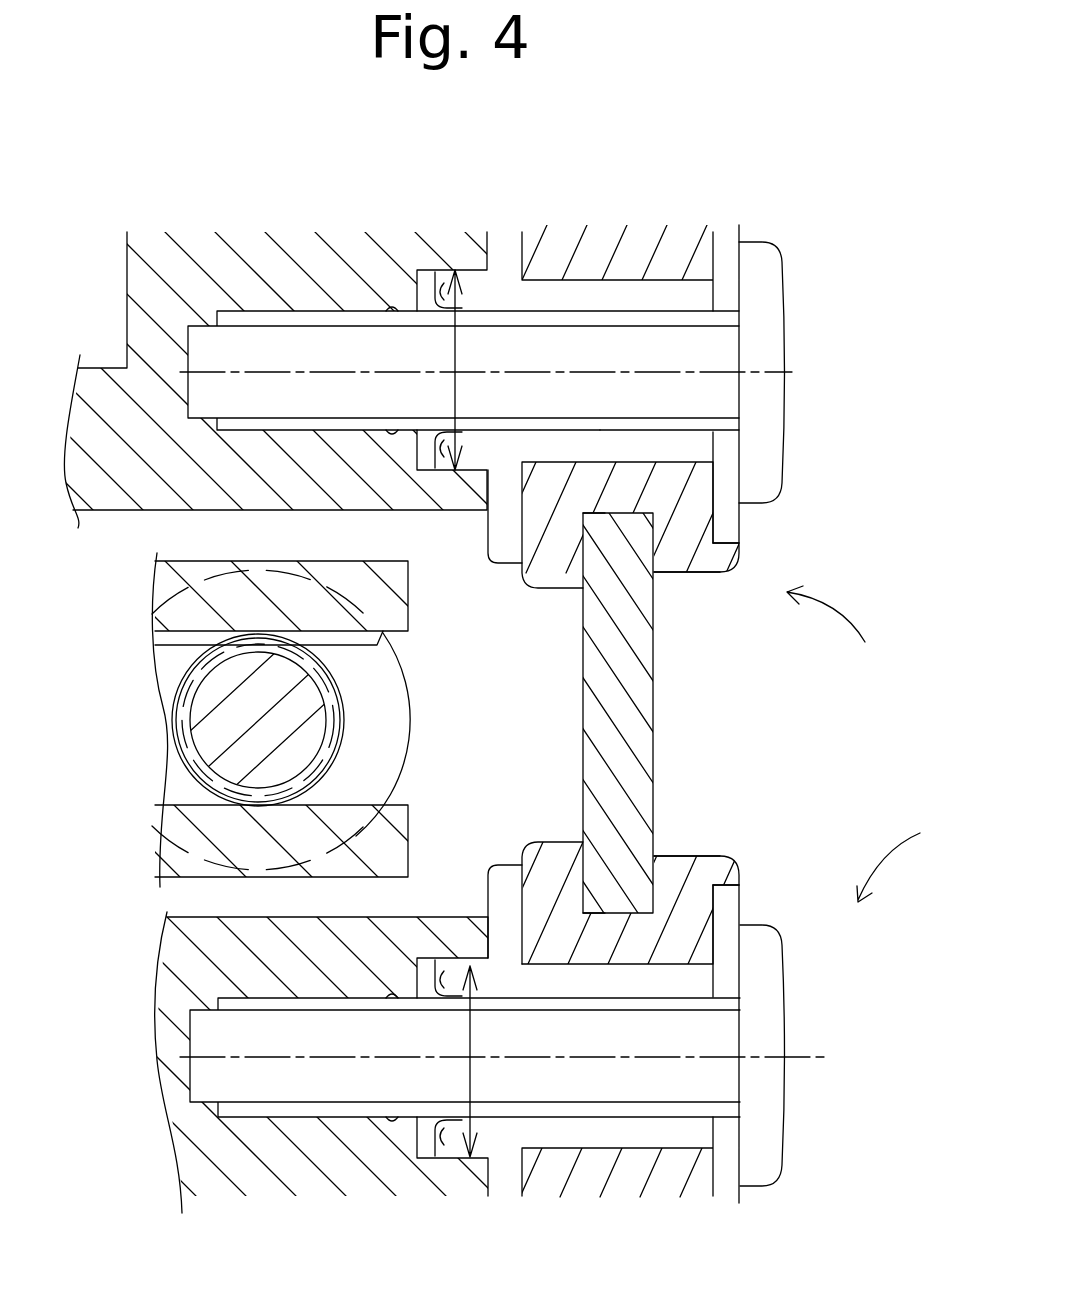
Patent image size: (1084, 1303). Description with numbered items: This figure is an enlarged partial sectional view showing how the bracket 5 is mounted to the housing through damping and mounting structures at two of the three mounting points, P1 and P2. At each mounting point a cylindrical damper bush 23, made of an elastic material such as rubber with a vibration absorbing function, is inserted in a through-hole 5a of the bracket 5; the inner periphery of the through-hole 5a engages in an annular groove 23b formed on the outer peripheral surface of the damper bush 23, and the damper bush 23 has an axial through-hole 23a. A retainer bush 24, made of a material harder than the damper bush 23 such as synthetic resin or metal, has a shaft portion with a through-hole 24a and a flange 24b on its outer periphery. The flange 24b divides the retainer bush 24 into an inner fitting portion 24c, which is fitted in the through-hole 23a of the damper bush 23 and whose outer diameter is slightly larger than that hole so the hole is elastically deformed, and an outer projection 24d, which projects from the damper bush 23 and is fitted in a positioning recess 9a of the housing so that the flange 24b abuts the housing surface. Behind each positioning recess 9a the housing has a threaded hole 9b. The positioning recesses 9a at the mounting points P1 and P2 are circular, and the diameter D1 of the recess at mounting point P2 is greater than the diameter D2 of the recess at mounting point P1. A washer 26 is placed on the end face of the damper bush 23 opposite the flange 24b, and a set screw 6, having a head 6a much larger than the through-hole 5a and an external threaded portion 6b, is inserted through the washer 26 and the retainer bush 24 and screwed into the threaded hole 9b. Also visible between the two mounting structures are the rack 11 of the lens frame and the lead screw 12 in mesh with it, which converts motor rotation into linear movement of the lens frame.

The bracket 5 is at (632, 720).
The through-hole 5a is at (655, 512).
The set screw 6 is at (778, 357).
The head 6a is at (773, 1127).
The external threaded portion 6b is at (305, 342).
The positioning recess 9a is at (458, 478).
The threaded hole 9b is at (387, 313).
The rack 11 is at (185, 603).
The lead screw 12 is at (238, 725).
The cylindrical damper bush 23 is at (745, 866).
The axial through-hole 23a is at (705, 478).
The annular groove 23b is at (605, 517).
The retainer bush 24 is at (562, 448).
The through-hole 24a is at (613, 430).
The flange 24b is at (488, 553).
The inner fitting portion 24c is at (565, 980).
The outer projection 24d is at (417, 463).
The washer 26 is at (728, 467).
The diameter D1 is at (479, 370).
The diameter D2 is at (494, 1061).
The mounting point P1 is at (912, 854).
The mounting point P2 is at (854, 626).